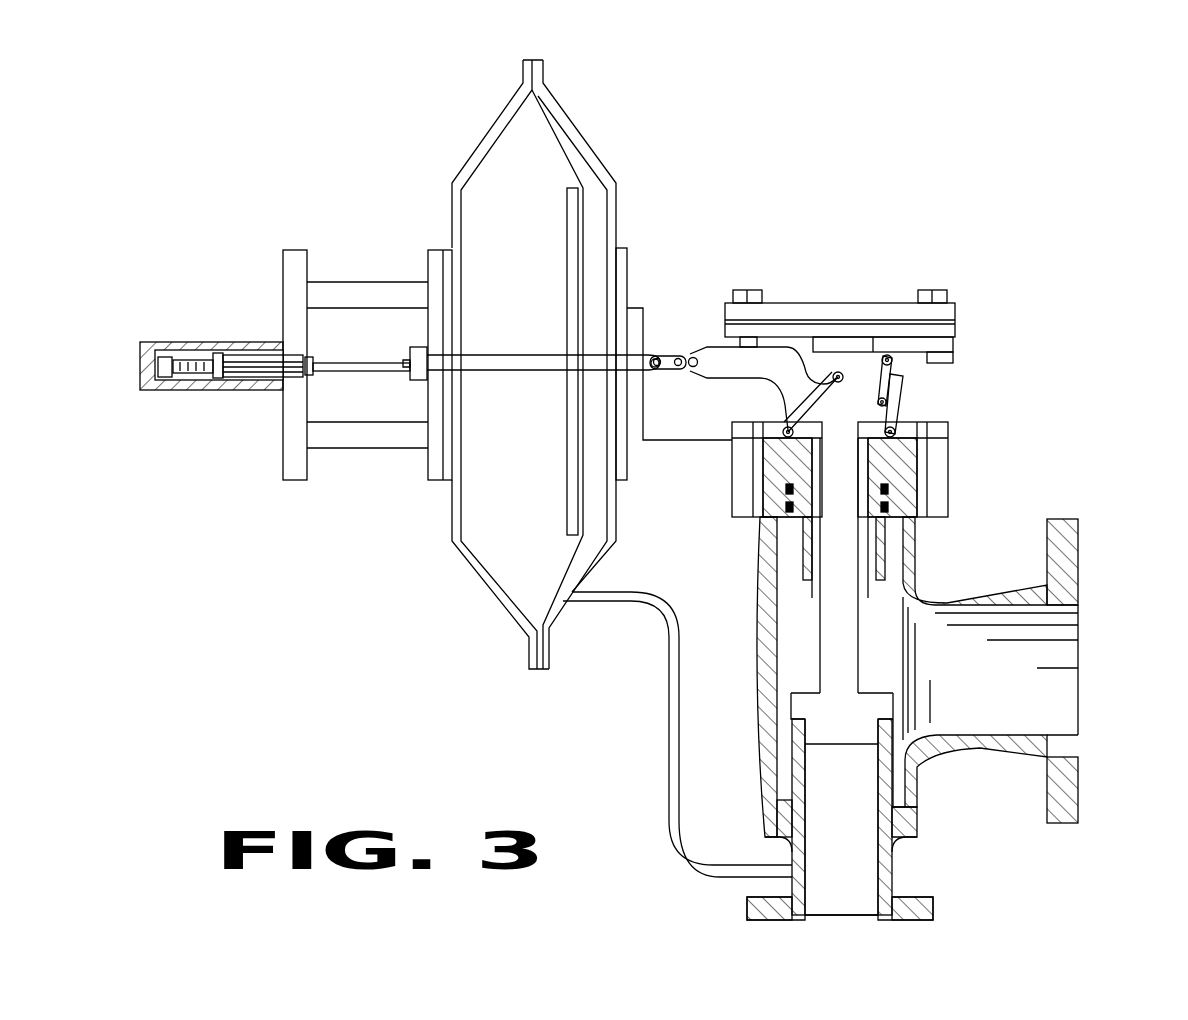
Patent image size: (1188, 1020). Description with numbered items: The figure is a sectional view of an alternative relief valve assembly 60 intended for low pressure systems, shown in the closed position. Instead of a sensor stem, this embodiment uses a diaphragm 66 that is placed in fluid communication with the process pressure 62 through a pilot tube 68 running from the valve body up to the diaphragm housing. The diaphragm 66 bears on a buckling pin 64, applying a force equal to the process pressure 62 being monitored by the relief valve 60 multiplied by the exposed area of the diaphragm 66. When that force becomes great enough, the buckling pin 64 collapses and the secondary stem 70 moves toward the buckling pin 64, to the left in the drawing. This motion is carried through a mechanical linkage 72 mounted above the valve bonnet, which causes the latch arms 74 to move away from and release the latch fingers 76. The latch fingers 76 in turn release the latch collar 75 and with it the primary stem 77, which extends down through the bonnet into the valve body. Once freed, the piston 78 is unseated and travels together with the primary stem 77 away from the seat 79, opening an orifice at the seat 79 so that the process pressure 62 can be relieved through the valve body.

The relief valve assembly 60 is at (1027, 315).
The process pressure 62 is at (865, 870).
The buckling pin 64 is at (337, 360).
The diaphragm 66 is at (583, 230).
The pilot tube 68 is at (669, 753).
The secondary stem 70 is at (655, 345).
The mechanical linkage 72 is at (776, 355).
The latch arms 74 is at (913, 363).
The latch collar 75 is at (870, 415).
The latch fingers 76 is at (900, 395).
The primary stem 77 is at (832, 647).
The piston 78 is at (805, 702).
The seat 79 is at (882, 736).